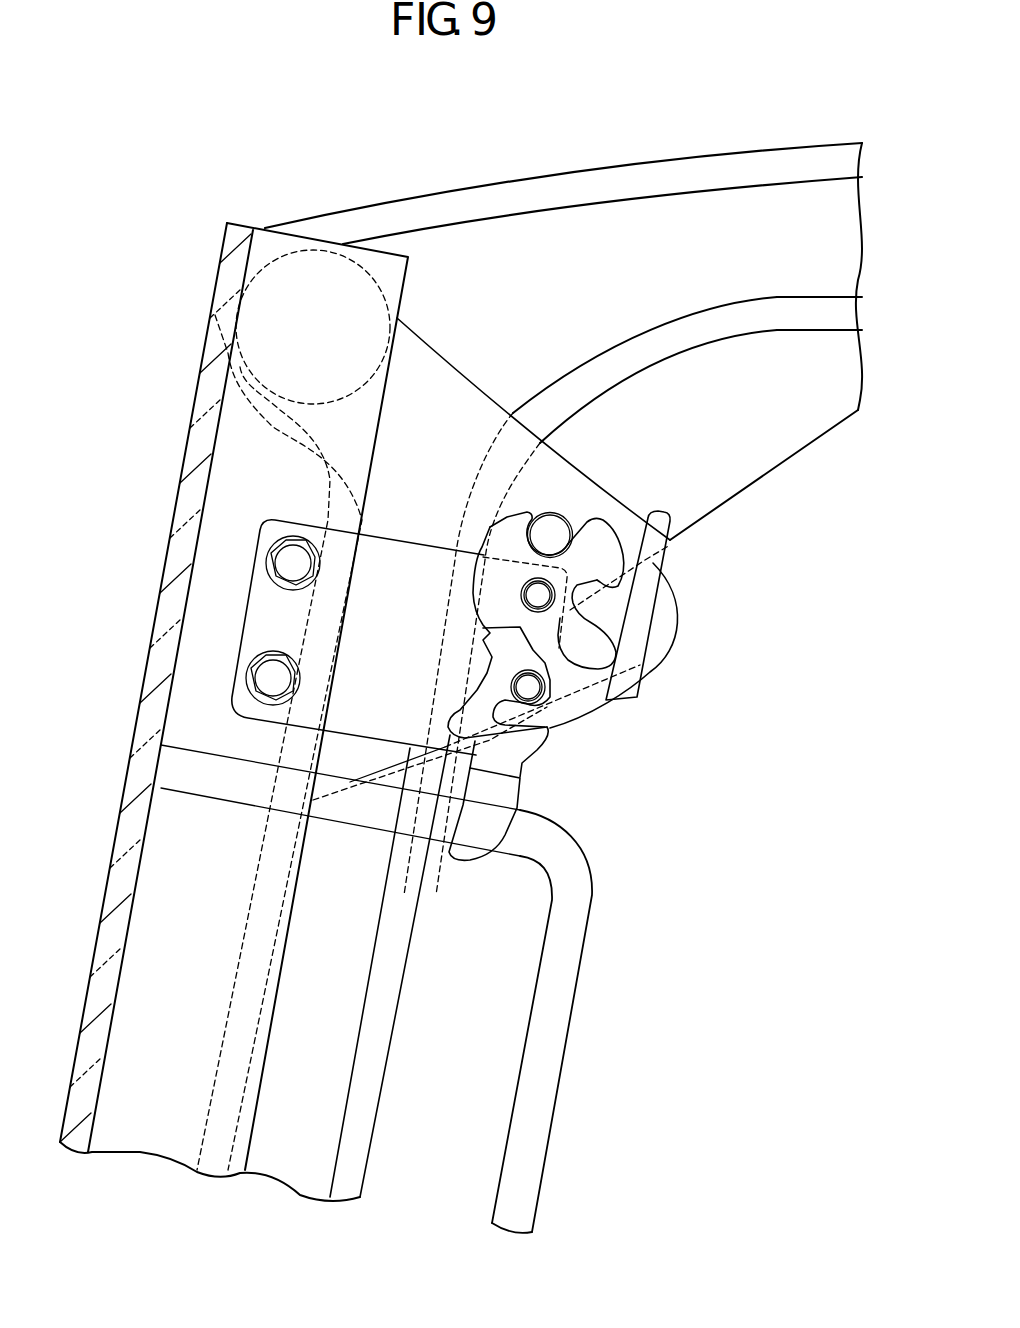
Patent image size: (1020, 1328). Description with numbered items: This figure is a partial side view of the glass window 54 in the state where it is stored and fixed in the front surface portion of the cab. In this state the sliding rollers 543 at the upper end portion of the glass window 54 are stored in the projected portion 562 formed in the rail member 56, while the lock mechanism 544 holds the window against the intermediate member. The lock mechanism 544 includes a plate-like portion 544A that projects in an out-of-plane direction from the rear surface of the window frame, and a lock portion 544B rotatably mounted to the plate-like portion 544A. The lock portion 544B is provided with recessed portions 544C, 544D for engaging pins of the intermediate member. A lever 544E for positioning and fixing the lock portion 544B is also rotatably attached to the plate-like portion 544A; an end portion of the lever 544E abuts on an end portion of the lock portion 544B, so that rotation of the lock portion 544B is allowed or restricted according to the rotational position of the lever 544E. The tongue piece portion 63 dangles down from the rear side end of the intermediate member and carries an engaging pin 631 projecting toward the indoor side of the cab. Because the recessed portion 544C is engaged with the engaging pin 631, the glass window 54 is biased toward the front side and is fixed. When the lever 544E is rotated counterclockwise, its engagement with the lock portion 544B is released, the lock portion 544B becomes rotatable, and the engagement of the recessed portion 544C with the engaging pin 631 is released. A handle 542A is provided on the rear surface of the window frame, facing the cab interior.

The glass window 54 is at (203, 413).
The rail member 56 is at (692, 172).
The projected portion 562 is at (374, 232).
The sliding rollers 543 is at (317, 293).
The tongue piece portion 63 is at (790, 425).
The engaging pin 631 is at (551, 528).
The lock mechanism 544 is at (692, 623).
The plate-like portion 544A is at (405, 558).
The lock portion 544B is at (642, 522).
The recessed portion 544C is at (602, 545).
The recessed portion 544D is at (606, 623).
The lever 544E is at (510, 797).
The handle 542A is at (550, 1023).